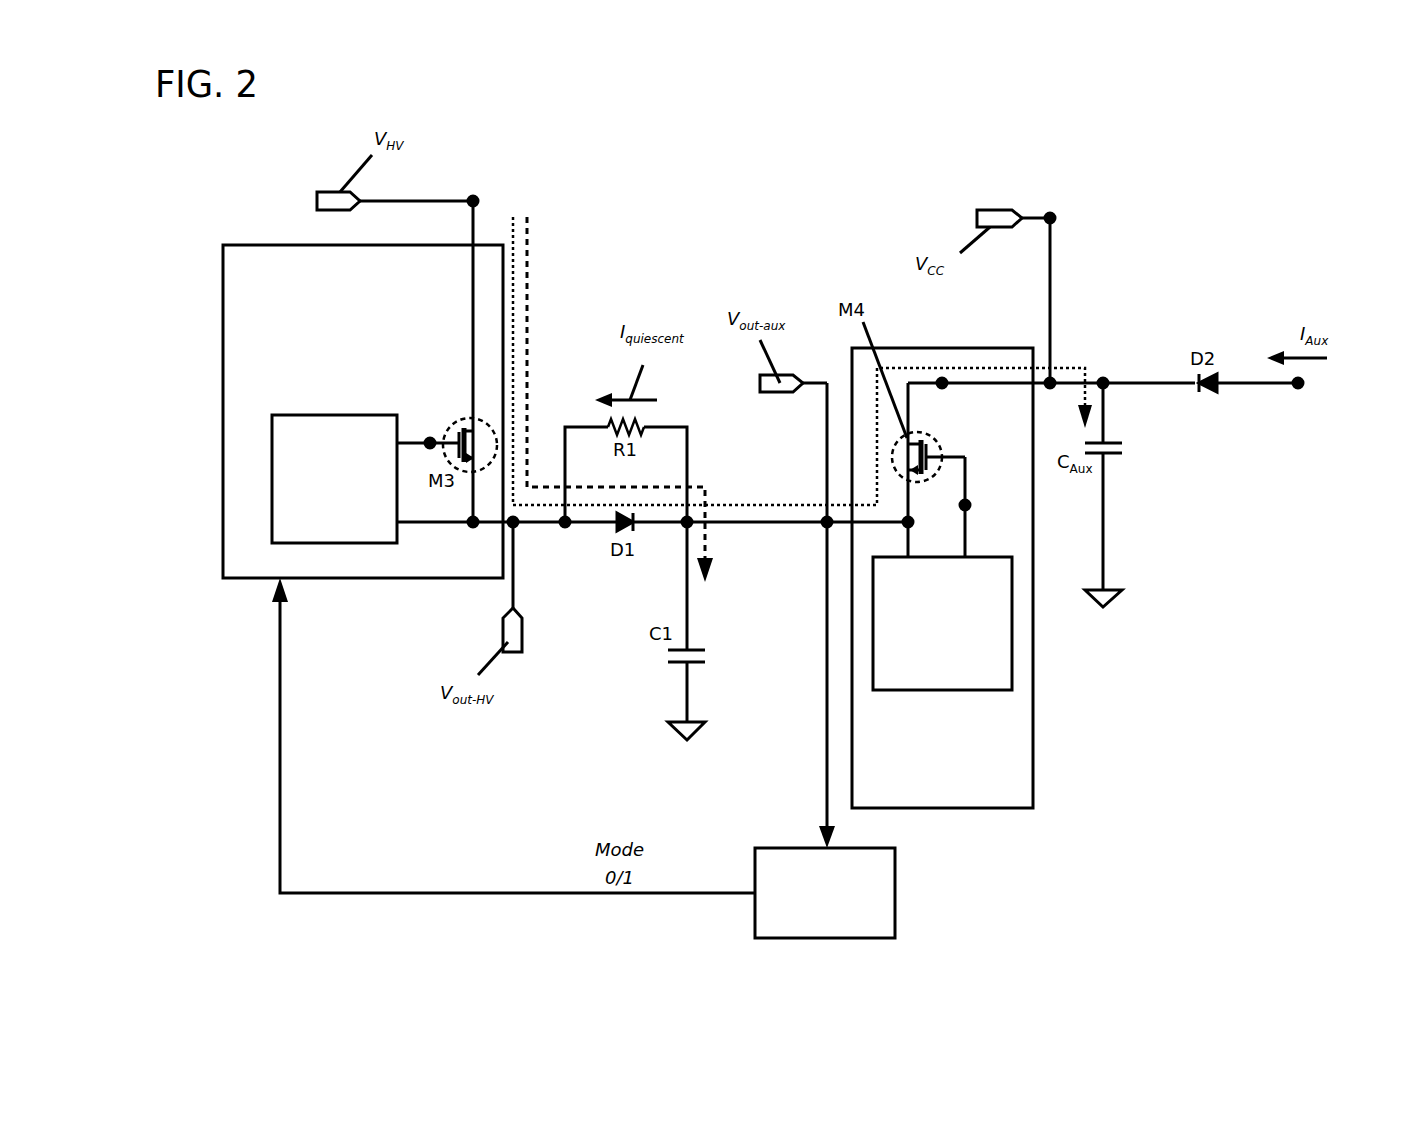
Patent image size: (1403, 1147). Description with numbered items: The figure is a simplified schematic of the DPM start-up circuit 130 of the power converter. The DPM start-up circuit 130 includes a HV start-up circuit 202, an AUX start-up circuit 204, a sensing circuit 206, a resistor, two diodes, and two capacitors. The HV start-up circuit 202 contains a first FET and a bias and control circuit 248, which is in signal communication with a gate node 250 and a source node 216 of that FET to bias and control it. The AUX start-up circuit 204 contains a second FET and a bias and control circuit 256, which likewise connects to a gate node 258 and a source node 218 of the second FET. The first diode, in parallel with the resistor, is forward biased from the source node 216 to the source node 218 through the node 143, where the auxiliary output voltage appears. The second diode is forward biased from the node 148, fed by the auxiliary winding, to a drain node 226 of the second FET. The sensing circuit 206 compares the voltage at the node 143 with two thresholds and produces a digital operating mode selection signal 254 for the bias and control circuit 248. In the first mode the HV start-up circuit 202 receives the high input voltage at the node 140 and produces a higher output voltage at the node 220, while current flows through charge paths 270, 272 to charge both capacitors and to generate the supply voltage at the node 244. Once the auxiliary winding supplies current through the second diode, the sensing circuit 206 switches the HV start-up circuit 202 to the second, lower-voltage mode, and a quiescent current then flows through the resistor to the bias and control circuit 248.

The DPM start-up circuit 130 is at (203, 172).
The node 140 is at (473, 201).
The node 143 is at (827, 522).
The node 148 is at (1298, 383).
The HV start-up circuit 202 is at (363, 411).
The AUX start-up circuit 204 is at (942, 578).
The sensing circuit 206 is at (825, 893).
The source node 216 is at (473, 522).
The source node 218 is at (908, 522).
The node 220 is at (513, 522).
The drain node 226 is at (942, 383).
The node 244 is at (1050, 218).
The bias and control circuit 248 is at (334, 479).
The gate node 250 is at (430, 443).
The digital operating mode selection signal 254 is at (588, 913).
The bias and control circuit 256 is at (942, 623).
The gate node 258 is at (965, 505).
The charge path 270 is at (1085, 368).
The charge path 272 is at (707, 535).